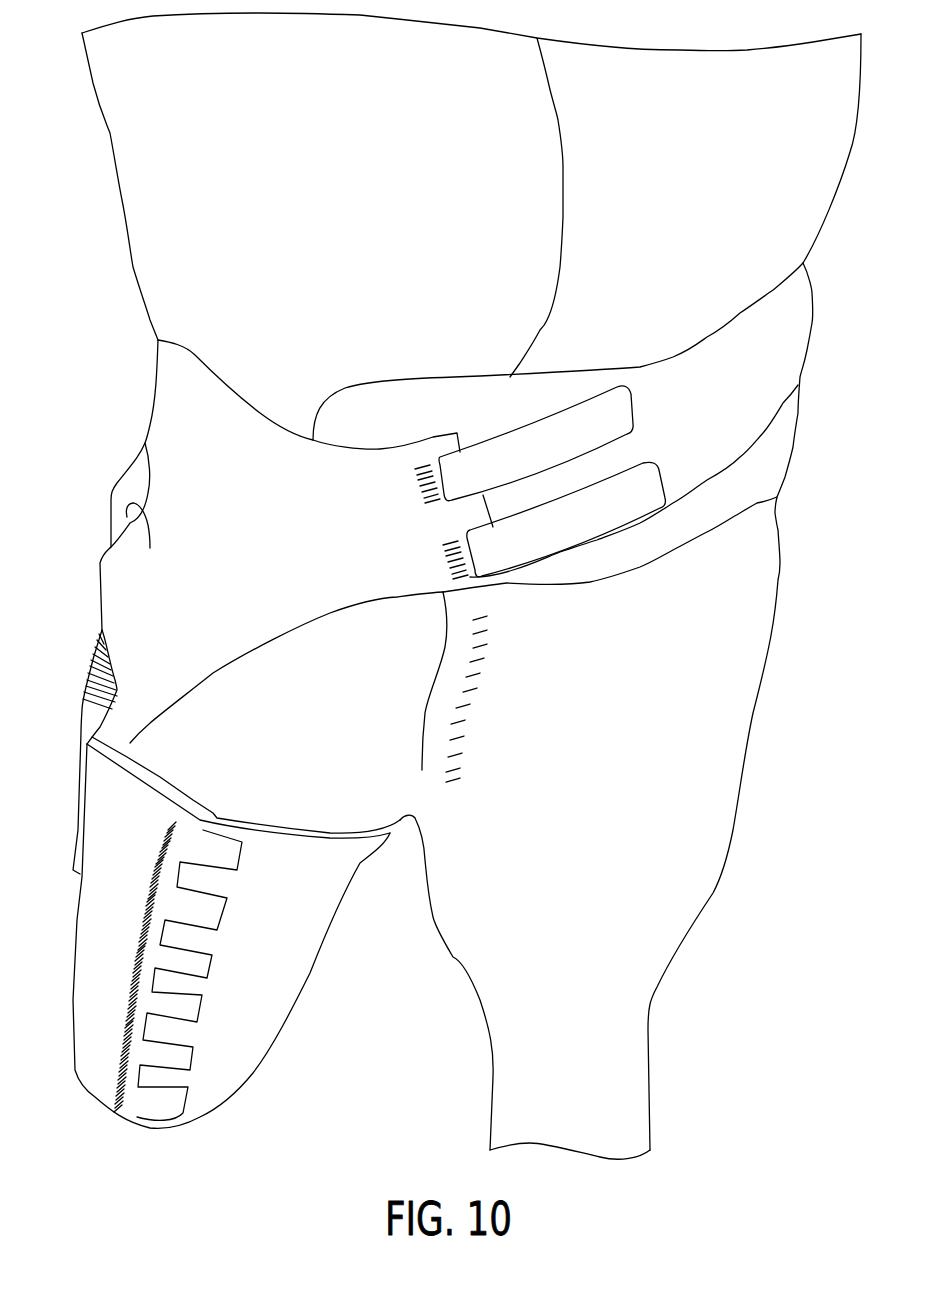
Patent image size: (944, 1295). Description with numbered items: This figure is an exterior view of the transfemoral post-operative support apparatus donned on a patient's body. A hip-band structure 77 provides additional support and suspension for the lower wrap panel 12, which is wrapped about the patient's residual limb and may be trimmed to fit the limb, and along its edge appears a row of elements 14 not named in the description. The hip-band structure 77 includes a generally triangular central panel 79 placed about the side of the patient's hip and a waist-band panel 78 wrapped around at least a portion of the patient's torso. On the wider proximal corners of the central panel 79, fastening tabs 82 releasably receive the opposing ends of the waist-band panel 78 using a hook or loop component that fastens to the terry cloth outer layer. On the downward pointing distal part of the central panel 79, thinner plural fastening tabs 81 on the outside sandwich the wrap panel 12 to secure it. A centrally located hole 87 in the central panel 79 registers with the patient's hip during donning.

The wrap panel 12 is at (288, 983).
The fastening tabs 14 is at (227, 858).
The hip-band structure 77 is at (288, 365).
The waist-band panel 78 is at (675, 397).
The central panel 79 is at (210, 662).
The fastening tabs 81 is at (92, 700).
The fastening tabs 82 is at (520, 452).
The hole 87 is at (131, 485).